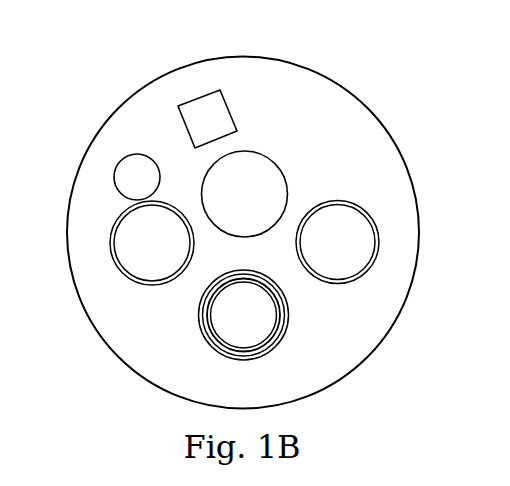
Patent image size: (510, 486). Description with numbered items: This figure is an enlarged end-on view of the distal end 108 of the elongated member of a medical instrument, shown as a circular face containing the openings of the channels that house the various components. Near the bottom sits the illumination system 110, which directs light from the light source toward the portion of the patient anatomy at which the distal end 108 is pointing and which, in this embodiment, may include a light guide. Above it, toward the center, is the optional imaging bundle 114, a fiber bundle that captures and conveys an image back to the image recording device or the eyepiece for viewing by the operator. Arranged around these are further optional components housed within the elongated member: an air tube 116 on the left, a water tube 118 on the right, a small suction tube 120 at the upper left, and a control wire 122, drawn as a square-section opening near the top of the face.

The distal end 108 is at (372, 68).
The illumination system 110 is at (255, 344).
The imaging bundle 114 is at (274, 158).
The air tube 116 is at (145, 278).
The water tube 118 is at (363, 213).
The suction tube 120 is at (116, 178).
The control wire 122 is at (187, 120).